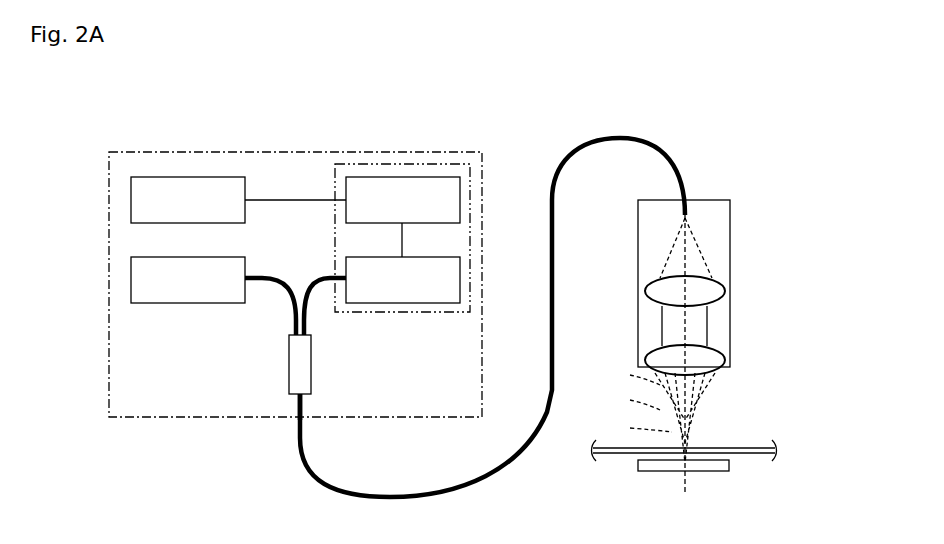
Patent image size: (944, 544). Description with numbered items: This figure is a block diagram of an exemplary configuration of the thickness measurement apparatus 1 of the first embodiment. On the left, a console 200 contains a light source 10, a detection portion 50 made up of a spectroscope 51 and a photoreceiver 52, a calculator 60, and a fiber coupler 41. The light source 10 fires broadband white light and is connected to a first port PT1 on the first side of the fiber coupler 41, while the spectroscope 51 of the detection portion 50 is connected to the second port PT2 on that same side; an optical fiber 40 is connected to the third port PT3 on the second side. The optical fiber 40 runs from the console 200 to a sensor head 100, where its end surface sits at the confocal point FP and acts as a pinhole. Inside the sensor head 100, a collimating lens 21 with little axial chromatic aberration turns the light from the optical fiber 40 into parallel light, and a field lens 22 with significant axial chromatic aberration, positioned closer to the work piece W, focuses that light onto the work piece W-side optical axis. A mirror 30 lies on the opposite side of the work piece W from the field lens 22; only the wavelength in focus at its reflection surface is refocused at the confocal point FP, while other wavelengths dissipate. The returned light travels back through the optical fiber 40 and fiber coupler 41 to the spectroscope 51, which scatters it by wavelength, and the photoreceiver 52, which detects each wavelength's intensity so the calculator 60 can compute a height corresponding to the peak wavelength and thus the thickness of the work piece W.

The film thickness measurement apparatus 1 is at (705, 110).
The console 200 is at (327, 152).
The detection portion 50 is at (440, 164).
The calculator 60 is at (131, 204).
The light source 10 is at (131, 283).
The photoreceiver 52 is at (460, 192).
The spectroscope 51 is at (460, 272).
The fiber coupler 41 is at (305, 378).
The optical fiber 40 is at (620, 136).
The sensor head 100 is at (731, 222).
The collimating lens 21 is at (712, 290).
The field lens 22 is at (713, 355).
The mirror 30 is at (722, 465).
The confocal point FP is at (690, 215).
The work piece W is at (745, 448).
The first port PT1 is at (270, 306).
The second port PT2 is at (325, 306).
The third port PT3 is at (273, 406).